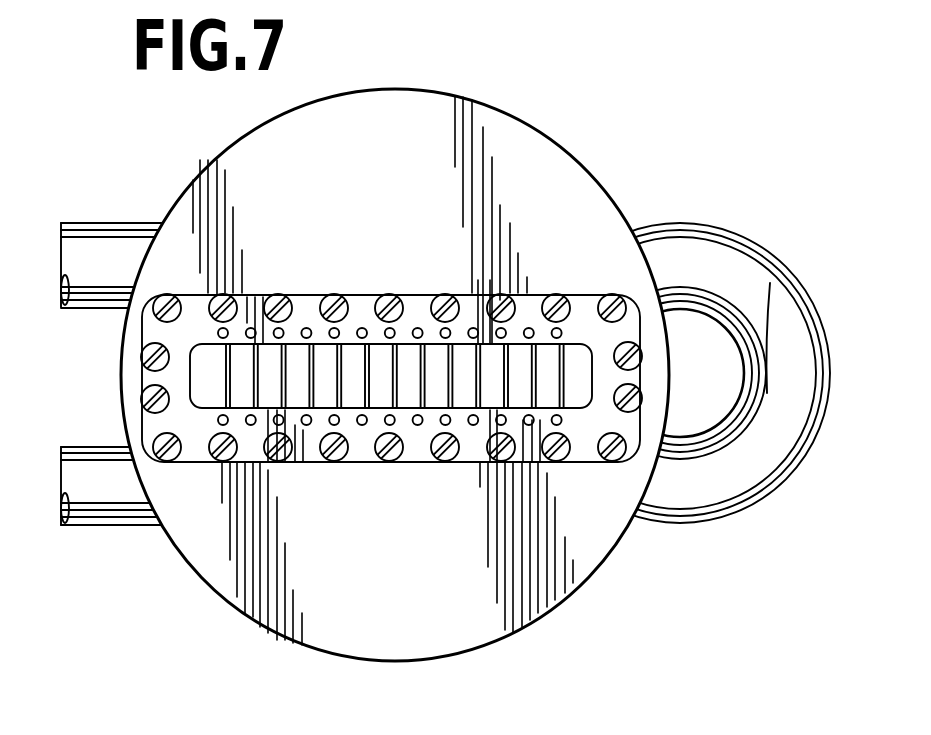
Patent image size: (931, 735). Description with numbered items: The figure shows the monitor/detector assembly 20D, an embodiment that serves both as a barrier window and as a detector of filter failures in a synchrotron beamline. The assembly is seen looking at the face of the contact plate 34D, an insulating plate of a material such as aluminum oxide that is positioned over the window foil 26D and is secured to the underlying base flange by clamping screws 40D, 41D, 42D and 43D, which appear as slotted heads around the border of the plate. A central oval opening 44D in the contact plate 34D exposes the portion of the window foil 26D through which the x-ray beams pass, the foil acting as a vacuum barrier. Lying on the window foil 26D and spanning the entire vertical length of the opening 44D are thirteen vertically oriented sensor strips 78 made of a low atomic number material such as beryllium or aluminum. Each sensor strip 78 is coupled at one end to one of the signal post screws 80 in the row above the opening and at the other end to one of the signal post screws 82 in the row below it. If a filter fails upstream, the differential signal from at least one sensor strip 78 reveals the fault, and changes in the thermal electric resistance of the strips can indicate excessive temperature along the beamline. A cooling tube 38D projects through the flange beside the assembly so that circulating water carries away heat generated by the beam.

The monitor/detector assembly 20D is at (706, 562).
The window foil 26D is at (572, 392).
The contact plate 34D is at (196, 458).
The cooling tube 38D is at (757, 246).
The clamping screw 40D is at (390, 297).
The clamping screw 41D is at (145, 355).
The clamping screw 42D is at (145, 402).
The clamping screw 43D is at (408, 462).
The central oval opening 44D is at (573, 348).
The sensor strip 78 is at (352, 374).
The signal post screw 80 is at (306, 320).
The signal post screw 82 is at (305, 426).